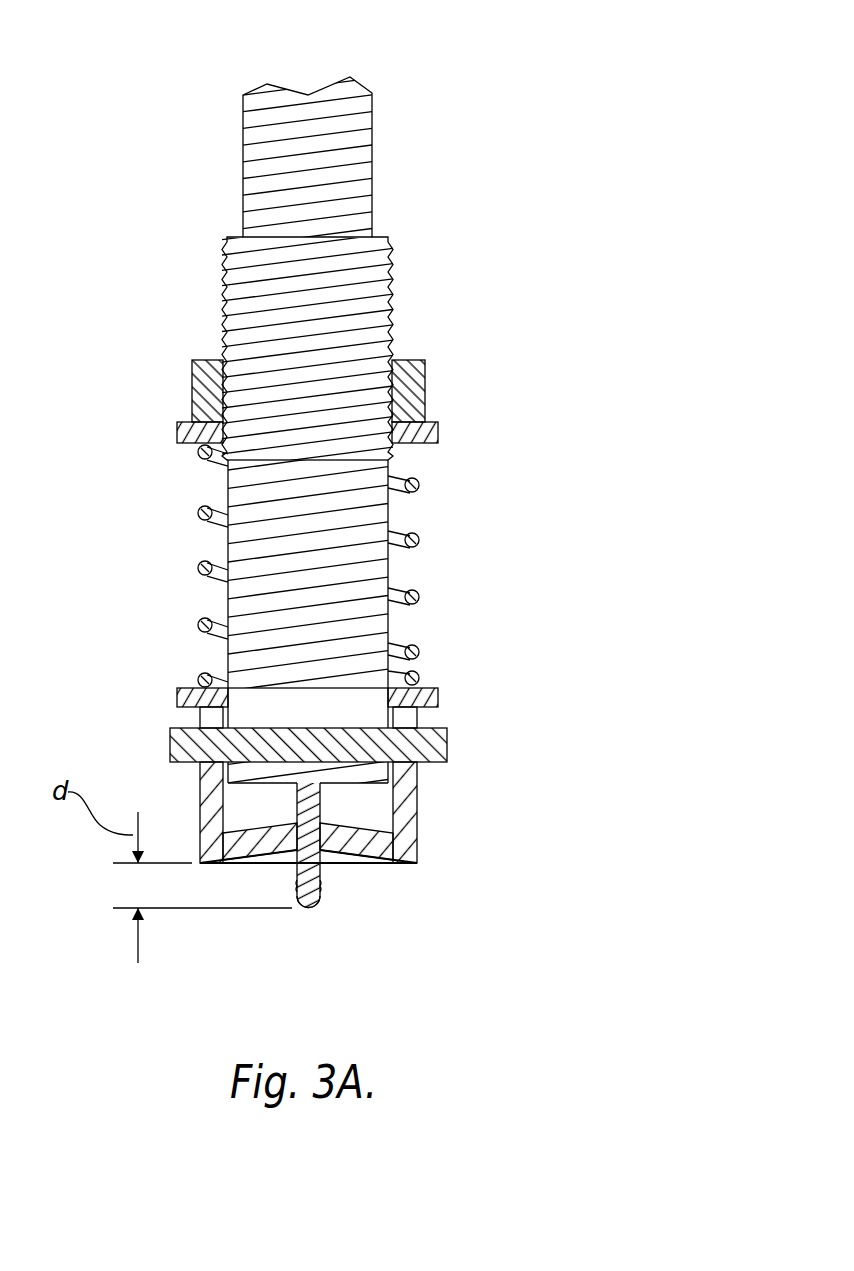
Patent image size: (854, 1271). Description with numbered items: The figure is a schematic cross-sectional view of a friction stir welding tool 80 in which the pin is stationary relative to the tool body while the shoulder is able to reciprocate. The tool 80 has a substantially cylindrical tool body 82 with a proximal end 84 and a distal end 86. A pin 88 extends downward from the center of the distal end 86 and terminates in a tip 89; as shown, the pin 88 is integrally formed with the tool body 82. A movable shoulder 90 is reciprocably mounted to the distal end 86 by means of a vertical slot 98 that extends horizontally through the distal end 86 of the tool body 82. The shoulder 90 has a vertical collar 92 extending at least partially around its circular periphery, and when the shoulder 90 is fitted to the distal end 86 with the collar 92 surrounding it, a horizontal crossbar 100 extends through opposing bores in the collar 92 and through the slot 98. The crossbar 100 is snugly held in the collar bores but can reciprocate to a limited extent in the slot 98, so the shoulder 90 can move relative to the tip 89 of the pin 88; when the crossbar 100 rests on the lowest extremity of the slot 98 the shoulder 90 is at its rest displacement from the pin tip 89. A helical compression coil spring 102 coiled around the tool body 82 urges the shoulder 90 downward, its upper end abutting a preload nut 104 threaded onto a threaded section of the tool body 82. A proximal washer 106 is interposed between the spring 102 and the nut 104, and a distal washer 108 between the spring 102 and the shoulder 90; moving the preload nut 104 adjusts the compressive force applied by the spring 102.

The tool 80 is at (434, 509).
The tool body 82 is at (372, 138).
The proximal end 84 is at (386, 415).
The distal end 86 is at (427, 859).
The pin 88 is at (337, 885).
The tip 89 is at (310, 908).
The movable shoulder 90 is at (360, 821).
The vertical collar 92 is at (417, 773).
The vertical slot 98 is at (375, 715).
The horizontal crossbar 100 is at (447, 752).
The compression coil spring 102 is at (420, 540).
The preload nut 104 is at (427, 397).
The proximal washer 106 is at (438, 432).
The distal washer 108 is at (438, 700).